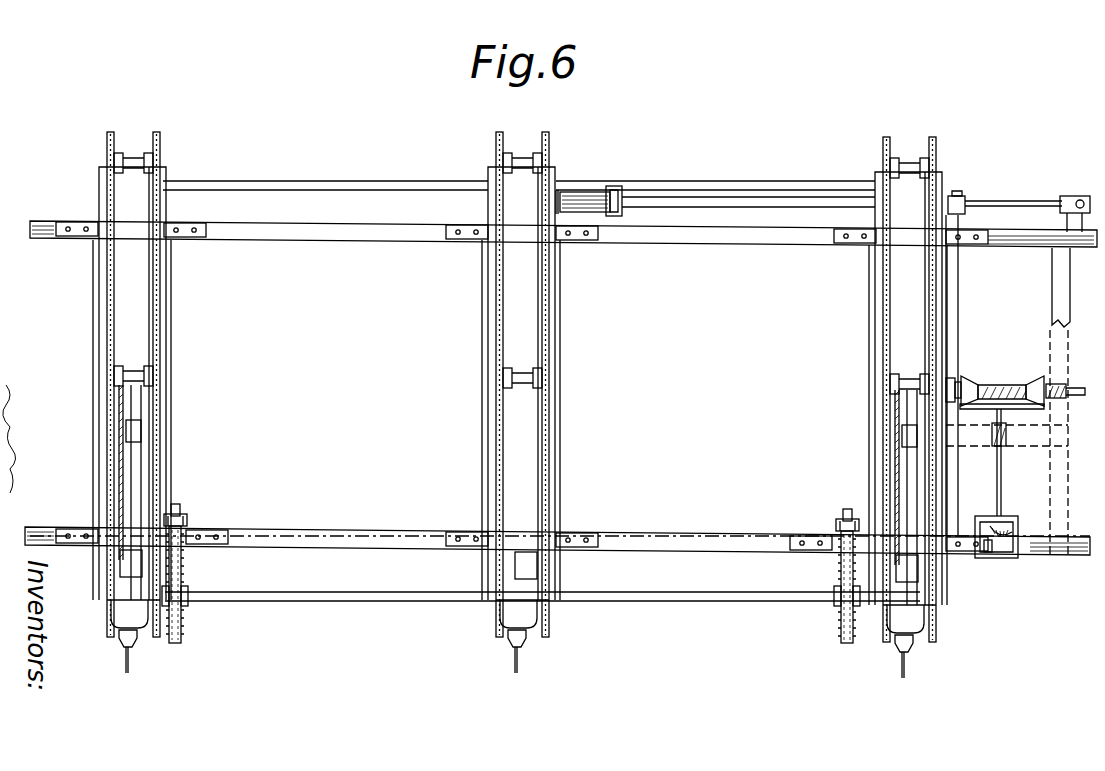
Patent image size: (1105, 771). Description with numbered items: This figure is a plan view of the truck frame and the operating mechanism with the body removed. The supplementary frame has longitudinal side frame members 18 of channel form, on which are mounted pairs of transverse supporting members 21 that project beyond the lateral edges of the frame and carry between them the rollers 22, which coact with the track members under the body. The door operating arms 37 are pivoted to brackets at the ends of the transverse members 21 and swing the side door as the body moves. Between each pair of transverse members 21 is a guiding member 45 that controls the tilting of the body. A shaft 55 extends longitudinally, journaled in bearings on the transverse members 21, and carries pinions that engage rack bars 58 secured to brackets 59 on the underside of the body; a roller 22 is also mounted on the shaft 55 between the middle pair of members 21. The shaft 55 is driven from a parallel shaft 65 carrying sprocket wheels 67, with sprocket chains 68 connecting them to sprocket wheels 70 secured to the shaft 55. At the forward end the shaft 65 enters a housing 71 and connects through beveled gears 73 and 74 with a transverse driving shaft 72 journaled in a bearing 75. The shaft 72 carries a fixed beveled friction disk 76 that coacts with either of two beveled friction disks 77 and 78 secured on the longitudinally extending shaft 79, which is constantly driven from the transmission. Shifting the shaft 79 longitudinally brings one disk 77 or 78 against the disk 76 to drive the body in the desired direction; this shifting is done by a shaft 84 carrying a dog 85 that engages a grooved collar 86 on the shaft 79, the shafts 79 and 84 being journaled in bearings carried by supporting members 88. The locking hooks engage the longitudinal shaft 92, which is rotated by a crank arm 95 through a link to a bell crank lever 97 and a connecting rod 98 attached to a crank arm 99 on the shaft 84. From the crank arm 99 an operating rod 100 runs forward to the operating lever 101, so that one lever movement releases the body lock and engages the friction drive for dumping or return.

The longitudinal side frame members 18 is at (355, 240).
The transverse supporting members 21 is at (115, 310).
The rollers 22 is at (123, 152).
The door operating arms 37 is at (125, 660).
The guiding members 45 is at (118, 472).
The shaft 55 is at (368, 602).
The rack bars 58 is at (131, 461).
The brackets 59 is at (141, 430).
The parallel shaft 65 is at (346, 530).
The sprocket wheels 67 is at (180, 514).
The sprocket chains 68 is at (183, 566).
The sprocket wheels 70 is at (183, 626).
The housing 71 is at (1027, 532).
The transverse driving shaft 72 is at (1002, 483).
The beveled gear 73 is at (993, 563).
The beveled gear 74 is at (1016, 522).
The bearing 75 is at (1007, 436).
The beveled friction disk 76 is at (1022, 408).
The beveled friction disk 77 is at (985, 382).
The beveled friction disk 78 is at (1052, 384).
The longitudinally extending shaft 79 is at (1072, 390).
The shaft 84 is at (958, 312).
The dog 85 is at (992, 442).
The grooved collar 86 is at (958, 385).
The supporting members 88 is at (1062, 324).
The longitudinal shaft 92 is at (262, 186).
The crank arm 95 is at (562, 192).
The bell crank lever 97 is at (600, 192).
The connecting rod 98 is at (772, 204).
The crank arm 99 is at (976, 188).
The operating rod 100 is at (1020, 190).
The operating lever 101 is at (1080, 199).